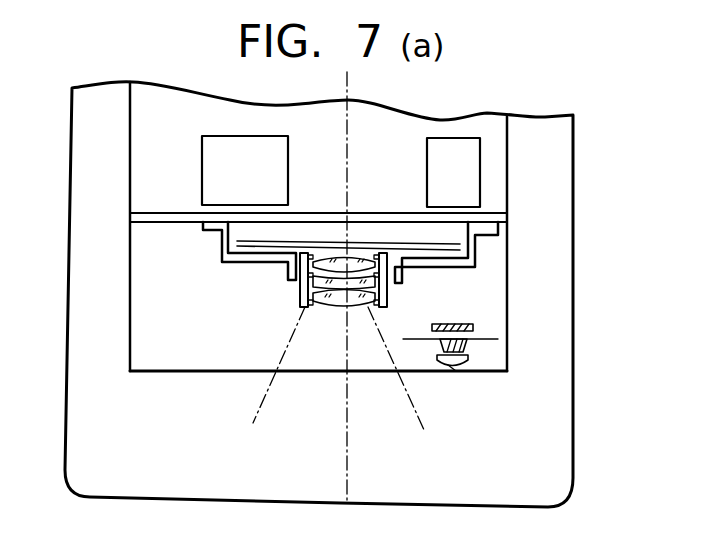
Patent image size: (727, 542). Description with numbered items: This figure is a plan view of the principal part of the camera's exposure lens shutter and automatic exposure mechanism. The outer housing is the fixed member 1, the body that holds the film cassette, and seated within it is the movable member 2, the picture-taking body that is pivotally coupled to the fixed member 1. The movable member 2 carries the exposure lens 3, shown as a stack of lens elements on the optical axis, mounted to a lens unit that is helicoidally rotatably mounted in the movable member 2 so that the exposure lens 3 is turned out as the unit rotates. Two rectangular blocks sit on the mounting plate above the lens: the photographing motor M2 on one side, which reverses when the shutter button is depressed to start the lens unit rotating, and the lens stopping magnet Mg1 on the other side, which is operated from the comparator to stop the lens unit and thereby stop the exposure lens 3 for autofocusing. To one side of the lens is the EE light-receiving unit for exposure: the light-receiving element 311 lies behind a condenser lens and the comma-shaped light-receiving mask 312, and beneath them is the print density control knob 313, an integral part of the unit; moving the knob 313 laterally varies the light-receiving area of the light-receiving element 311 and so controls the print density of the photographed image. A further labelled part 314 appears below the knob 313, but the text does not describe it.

The fixed member 1 is at (555, 432).
The movable member 2 is at (493, 266).
The exposure lens 3 is at (355, 307).
The photographing motor M2 is at (213, 177).
The lens stopping magnet Mg1 is at (467, 173).
The light-receiving element 311 is at (473, 329).
The light-receiving mask 312 is at (498, 339).
The print density control knob 313 is at (468, 352).
The lens drive member 314 is at (453, 374).